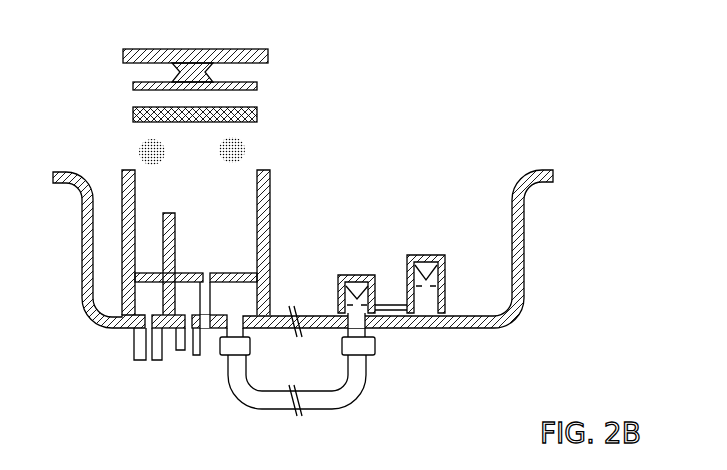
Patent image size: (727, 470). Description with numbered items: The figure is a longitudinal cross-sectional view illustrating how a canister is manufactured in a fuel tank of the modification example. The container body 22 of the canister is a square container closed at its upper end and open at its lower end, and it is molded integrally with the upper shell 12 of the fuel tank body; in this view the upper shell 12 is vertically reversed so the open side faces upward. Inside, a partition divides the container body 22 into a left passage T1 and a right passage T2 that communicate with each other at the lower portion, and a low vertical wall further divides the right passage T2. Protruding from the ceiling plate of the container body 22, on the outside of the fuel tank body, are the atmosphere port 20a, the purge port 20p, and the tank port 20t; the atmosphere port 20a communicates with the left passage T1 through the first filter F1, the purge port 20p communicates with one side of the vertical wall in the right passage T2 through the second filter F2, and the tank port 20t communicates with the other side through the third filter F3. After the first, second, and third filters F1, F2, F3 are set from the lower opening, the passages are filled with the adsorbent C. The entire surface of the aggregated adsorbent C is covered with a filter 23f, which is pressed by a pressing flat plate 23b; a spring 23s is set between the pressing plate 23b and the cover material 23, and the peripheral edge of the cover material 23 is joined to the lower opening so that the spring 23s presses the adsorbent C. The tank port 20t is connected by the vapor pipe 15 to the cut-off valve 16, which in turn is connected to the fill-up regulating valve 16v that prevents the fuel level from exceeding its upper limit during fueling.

The upper shell 12 is at (526, 257).
The vapor pipe 15 is at (349, 400).
The cut-off valve 16 is at (353, 277).
The fill-up regulating valve 16v is at (423, 255).
The atmosphere port 20a is at (133, 346).
The purge port 20p is at (188, 355).
The tank port 20t is at (205, 338).
The container body 22 is at (274, 239).
The cover material 23 is at (250, 50).
The spring 23s is at (215, 73).
The pressing flat plate 23b is at (252, 85).
The filter 23f is at (257, 117).
The adsorbent C is at (246, 150).
The left passage T1 is at (120, 247).
The right passage T2 is at (222, 232).
The first filter F1 is at (130, 285).
The second filter F2 is at (184, 273).
The third filter F3 is at (240, 270).